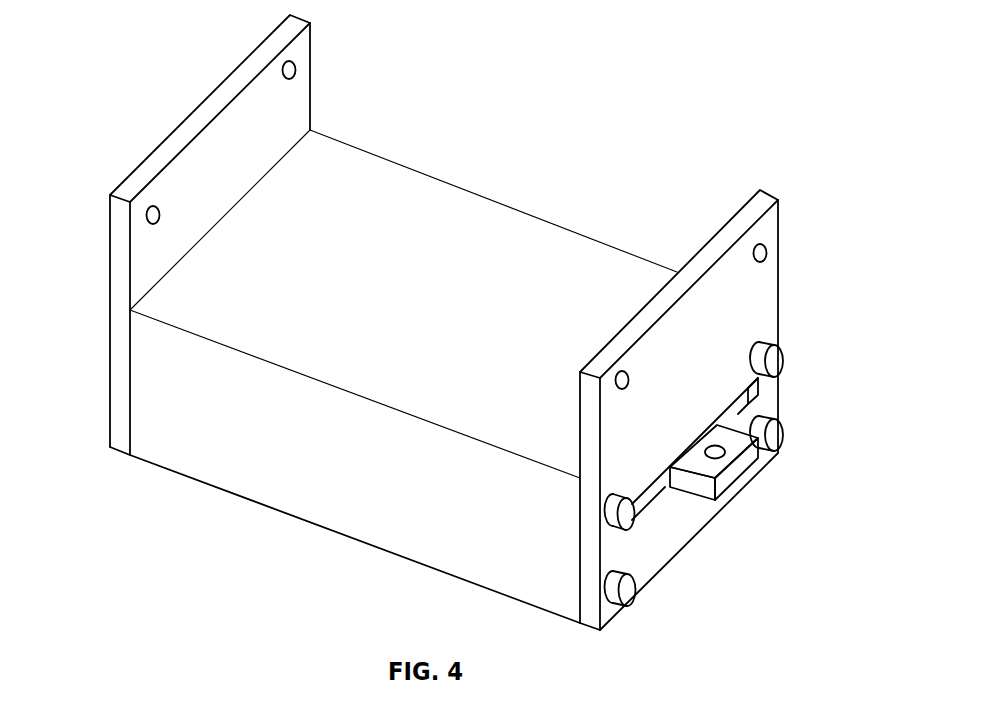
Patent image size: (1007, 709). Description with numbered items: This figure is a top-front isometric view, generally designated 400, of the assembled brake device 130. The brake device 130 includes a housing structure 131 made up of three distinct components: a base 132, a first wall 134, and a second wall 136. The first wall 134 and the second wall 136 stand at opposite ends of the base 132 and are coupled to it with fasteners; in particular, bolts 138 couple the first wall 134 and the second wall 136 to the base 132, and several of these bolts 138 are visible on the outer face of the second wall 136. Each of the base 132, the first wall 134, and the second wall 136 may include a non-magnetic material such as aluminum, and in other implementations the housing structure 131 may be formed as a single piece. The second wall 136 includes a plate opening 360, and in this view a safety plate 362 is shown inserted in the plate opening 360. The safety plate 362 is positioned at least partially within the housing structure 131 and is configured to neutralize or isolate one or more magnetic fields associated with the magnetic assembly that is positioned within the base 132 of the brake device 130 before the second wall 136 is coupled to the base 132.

The top-front isometric view 400 is at (788, 48).
The brake device 130 is at (292, 566).
The housing structure 131 is at (359, 120).
The base 132 is at (427, 175).
The first wall 134 is at (208, 98).
The second wall 136 is at (753, 195).
The bolts 138 is at (782, 372).
The plate opening 360 is at (650, 450).
The safety plate 362 is at (692, 497).